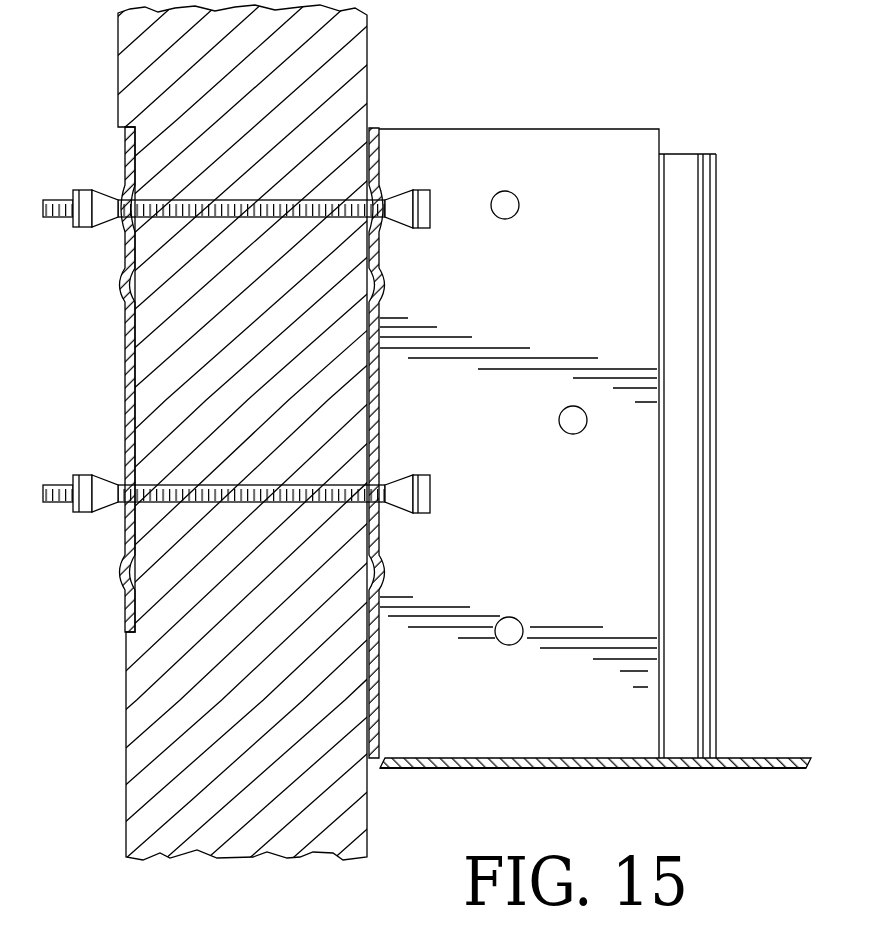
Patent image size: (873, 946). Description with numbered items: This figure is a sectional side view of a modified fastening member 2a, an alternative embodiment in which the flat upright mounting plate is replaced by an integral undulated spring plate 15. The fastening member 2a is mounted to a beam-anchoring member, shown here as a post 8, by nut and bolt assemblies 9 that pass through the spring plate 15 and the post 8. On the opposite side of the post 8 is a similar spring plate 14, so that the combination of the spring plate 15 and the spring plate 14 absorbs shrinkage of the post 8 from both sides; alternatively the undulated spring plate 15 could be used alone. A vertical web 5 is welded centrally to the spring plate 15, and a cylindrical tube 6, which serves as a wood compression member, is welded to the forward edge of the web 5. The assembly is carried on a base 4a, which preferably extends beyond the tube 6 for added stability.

The post 8 is at (118, 55).
The nut and bolt assemblies 9 is at (107, 197).
The spring plate 14 is at (128, 610).
The undulated spring plate 15 is at (382, 430).
The modified fastening member 2a is at (576, 381).
The vertical web 5 is at (601, 305).
The cylindrical tube 6 is at (670, 154).
The base 4a is at (740, 760).